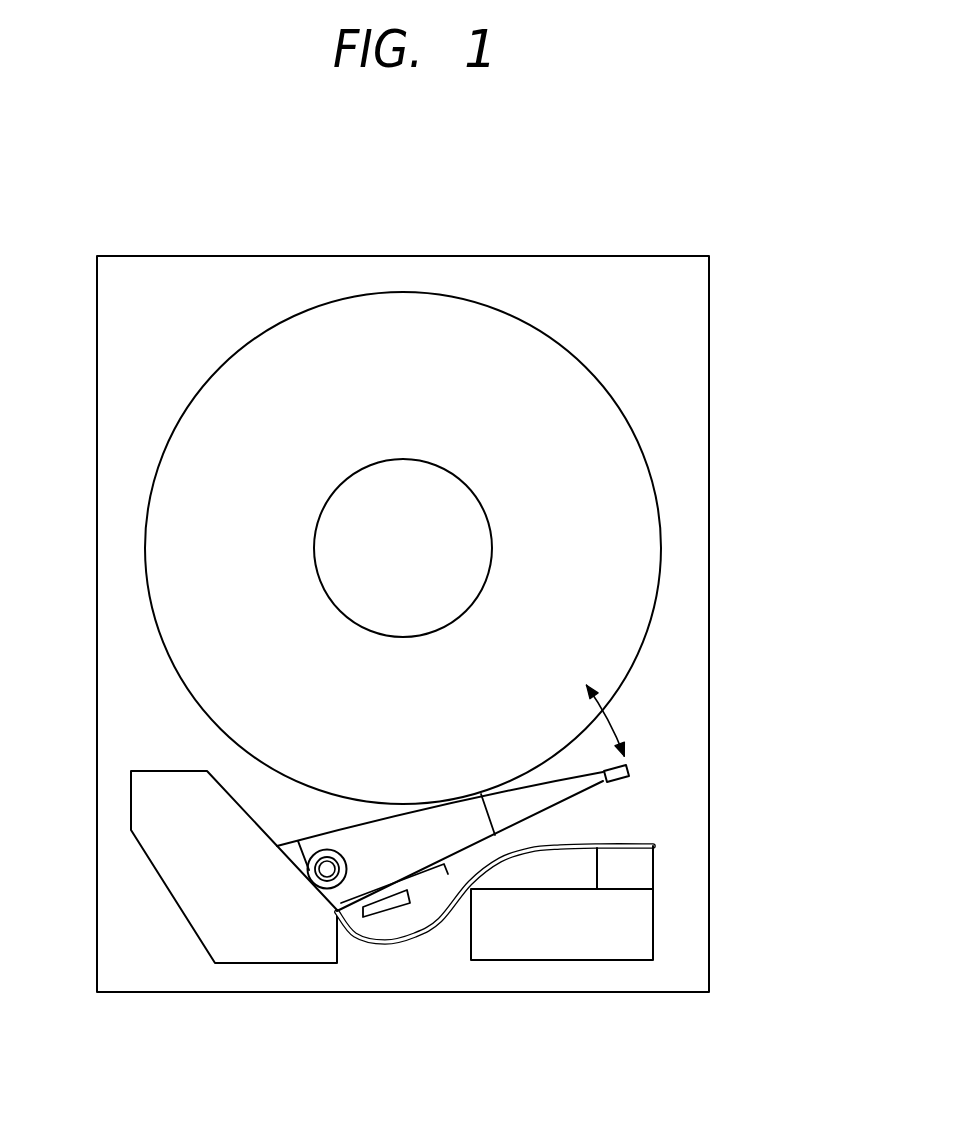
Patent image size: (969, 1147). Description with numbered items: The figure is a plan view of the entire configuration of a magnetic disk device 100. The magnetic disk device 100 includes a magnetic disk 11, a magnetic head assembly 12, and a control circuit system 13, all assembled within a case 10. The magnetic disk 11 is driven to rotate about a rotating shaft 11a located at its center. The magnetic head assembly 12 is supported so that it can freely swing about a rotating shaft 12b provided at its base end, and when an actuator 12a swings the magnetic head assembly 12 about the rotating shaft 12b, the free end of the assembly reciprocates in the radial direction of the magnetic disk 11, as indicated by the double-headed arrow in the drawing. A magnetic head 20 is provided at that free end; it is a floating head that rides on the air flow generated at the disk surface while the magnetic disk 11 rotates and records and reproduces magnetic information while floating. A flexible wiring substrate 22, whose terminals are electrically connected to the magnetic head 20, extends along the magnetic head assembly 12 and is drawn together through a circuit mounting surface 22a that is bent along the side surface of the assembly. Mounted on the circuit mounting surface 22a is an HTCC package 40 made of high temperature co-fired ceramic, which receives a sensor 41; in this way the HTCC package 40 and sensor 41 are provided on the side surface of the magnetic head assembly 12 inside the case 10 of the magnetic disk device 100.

The magnetic disk device 100 is at (160, 158).
The case 10 is at (624, 256).
The magnetic disk 11 is at (412, 308).
The rotating shaft 11a is at (318, 538).
The magnetic head assembly 12 is at (546, 802).
The actuator 12a is at (183, 871).
The rotating shaft 12b is at (323, 884).
The control circuit system 13 is at (643, 922).
The magnetic head 20 is at (628, 772).
The flexible wiring substrate 22 is at (495, 962).
The circuit mounting surface 22a is at (425, 873).
The sensor 41 is at (396, 1005).
The HTCC package 40 is at (380, 907).